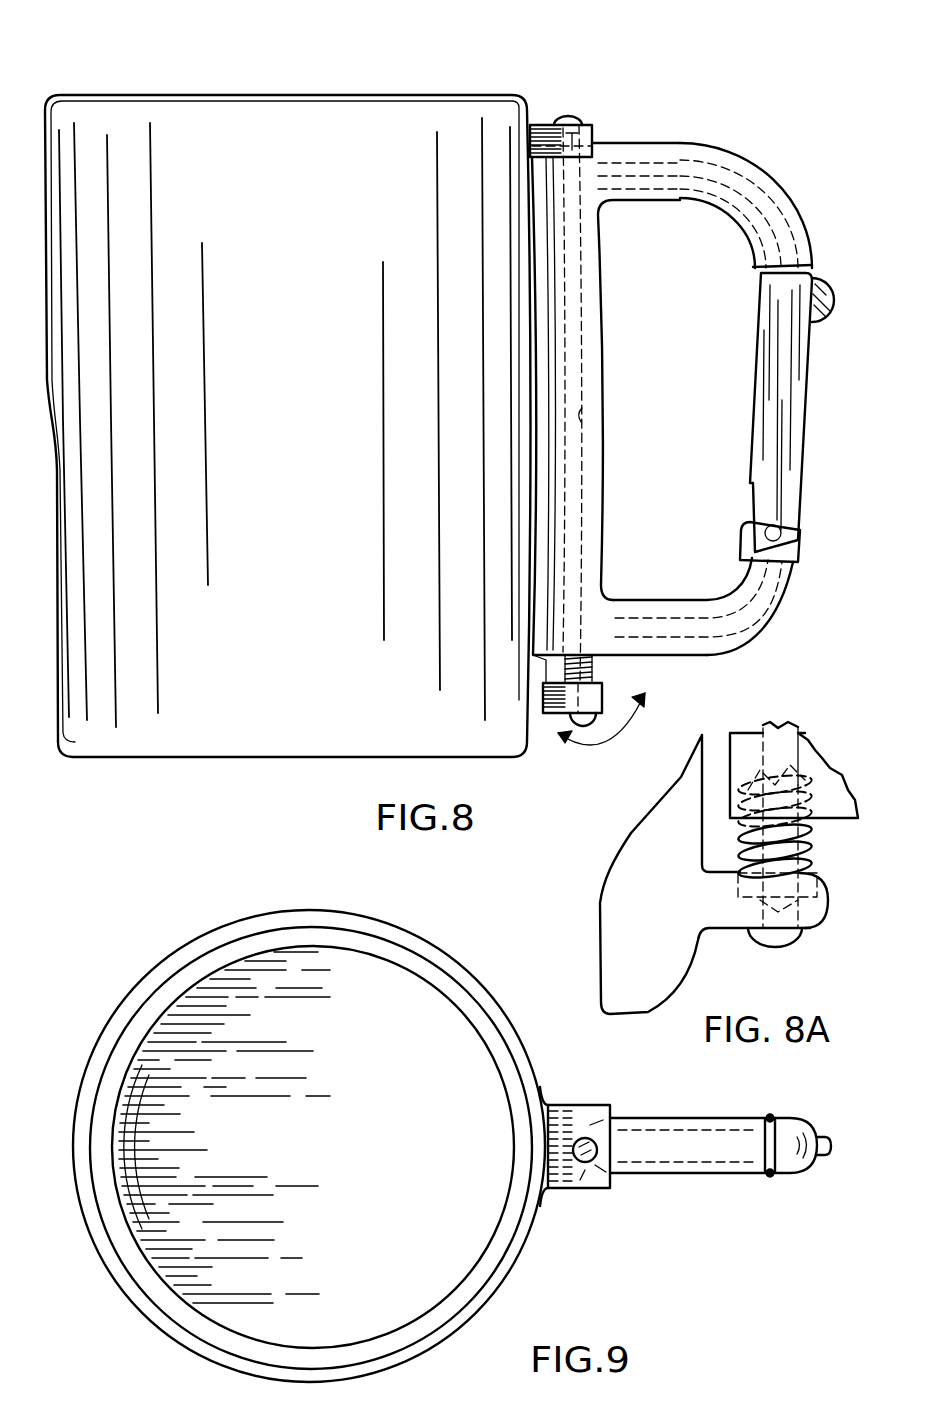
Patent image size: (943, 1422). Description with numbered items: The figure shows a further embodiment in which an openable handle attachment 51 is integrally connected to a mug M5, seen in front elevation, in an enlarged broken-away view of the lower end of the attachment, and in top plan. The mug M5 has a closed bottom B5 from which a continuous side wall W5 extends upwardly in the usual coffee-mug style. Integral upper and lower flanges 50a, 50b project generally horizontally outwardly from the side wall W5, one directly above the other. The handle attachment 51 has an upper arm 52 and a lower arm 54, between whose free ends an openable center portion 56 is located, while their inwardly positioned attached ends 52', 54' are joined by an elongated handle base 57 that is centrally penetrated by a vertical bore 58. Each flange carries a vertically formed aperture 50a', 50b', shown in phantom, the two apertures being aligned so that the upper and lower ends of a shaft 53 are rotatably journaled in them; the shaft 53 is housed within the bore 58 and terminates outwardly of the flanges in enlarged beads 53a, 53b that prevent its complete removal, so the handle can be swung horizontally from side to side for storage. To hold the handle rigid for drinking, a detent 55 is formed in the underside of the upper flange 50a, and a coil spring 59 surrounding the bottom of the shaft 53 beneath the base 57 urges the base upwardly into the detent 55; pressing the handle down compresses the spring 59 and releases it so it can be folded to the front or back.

In FIG. 8, the mug M5 is at (334, 90).
In FIG. 9, the mug M5 is at (309, 1111).
In FIG. 8, the side wall W5 is at (291, 280).
In FIG. 8A, the side wall W5 is at (669, 923).
In FIG. 9, the side wall W5 is at (143, 978).
In FIG. 9, the closed bottom B5 is at (408, 1123).
In FIG. 8, the handle attachment 51 is at (753, 100).
In FIG. 9, the handle attachment 51 is at (720, 1145).
In FIG. 8, the upper flange 50a is at (641, 86).
In FIG. 9, the upper flange 50a is at (609, 1138).
In FIG. 8, the upper flange aperture 50a' is at (671, 81).
In FIG. 9, the upper flange aperture 50a' is at (626, 1111).
In FIG. 8, the upper enlarged bead 53a is at (574, 124).
In FIG. 8, the detent 55 is at (595, 143).
In FIG. 9, the detent 55 is at (609, 1190).
In FIG. 8, the upper arm 52 is at (739, 206).
In FIG. 8, the attached end of upper arm 52' is at (665, 140).
In FIG. 8, the shaft 53 is at (570, 283).
In FIG. 8A, the shaft 53 is at (793, 748).
In FIG. 8, the handle base 57 is at (590, 377).
In FIG. 8A, the handle base 57 is at (835, 802).
In FIG. 8, the vertical bore 58 is at (584, 410).
In FIG. 8A, the vertical bore 58 is at (805, 768).
In FIG. 8, the openable center portion 56 is at (783, 393).
In FIG. 8, the lower arm 54 is at (737, 593).
In FIG. 8, the attached end of lower arm 54' is at (619, 404).
In FIG. 8, the spring 59 is at (583, 665).
In FIG. 8A, the spring 59 is at (800, 850).
In FIG. 8, the lower flange 50b is at (611, 723).
In FIG. 8A, the lower flange 50b is at (783, 900).
In FIG. 8, the lower flange aperture 50b' is at (699, 698).
In FIG. 8, the lower enlarged bead 53b is at (580, 715).
In FIG. 8A, the lower enlarged bead 53b is at (778, 938).